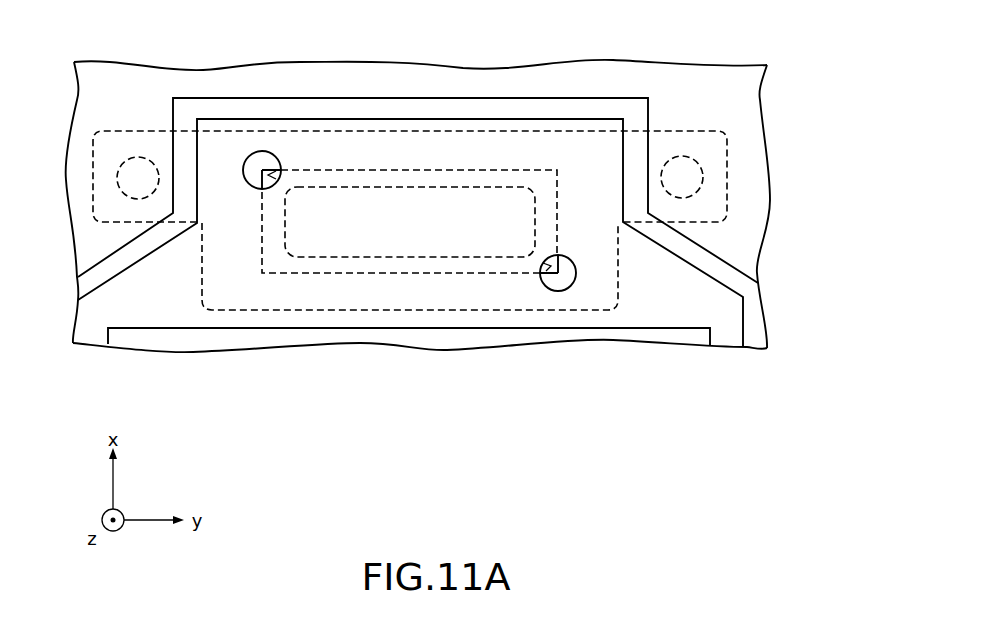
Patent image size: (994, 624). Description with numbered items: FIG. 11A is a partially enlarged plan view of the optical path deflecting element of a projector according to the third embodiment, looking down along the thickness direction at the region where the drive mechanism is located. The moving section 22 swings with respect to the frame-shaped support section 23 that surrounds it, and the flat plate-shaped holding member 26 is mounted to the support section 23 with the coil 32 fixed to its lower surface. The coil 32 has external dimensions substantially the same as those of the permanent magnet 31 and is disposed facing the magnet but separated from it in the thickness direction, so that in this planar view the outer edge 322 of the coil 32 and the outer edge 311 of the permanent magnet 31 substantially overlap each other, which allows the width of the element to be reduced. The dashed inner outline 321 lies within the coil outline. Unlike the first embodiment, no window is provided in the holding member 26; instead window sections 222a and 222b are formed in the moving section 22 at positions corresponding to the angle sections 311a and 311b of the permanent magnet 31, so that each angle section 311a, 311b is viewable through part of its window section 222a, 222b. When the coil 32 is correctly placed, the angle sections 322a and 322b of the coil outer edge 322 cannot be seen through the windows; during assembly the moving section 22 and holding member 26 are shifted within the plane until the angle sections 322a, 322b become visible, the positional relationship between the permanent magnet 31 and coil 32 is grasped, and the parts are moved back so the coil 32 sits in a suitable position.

The moving section 22 is at (718, 308).
The support section 23 is at (750, 238).
The holding member 26 is at (706, 124).
The permanent magnet 31 is at (409, 207).
The coil 32 is at (428, 150).
The outer edge of the permanent magnet 311 is at (262, 189).
The angle section of the permanent magnet 311a is at (567, 287).
The angle section of the permanent magnet 311b is at (250, 157).
The inner region 321 is at (370, 258).
The outer edge of the coil 322 is at (290, 276).
The angle section of the coil 322a is at (515, 258).
The angle section of the coil 322b is at (293, 172).
The window section 222a is at (543, 300).
The window section 222b is at (240, 163).